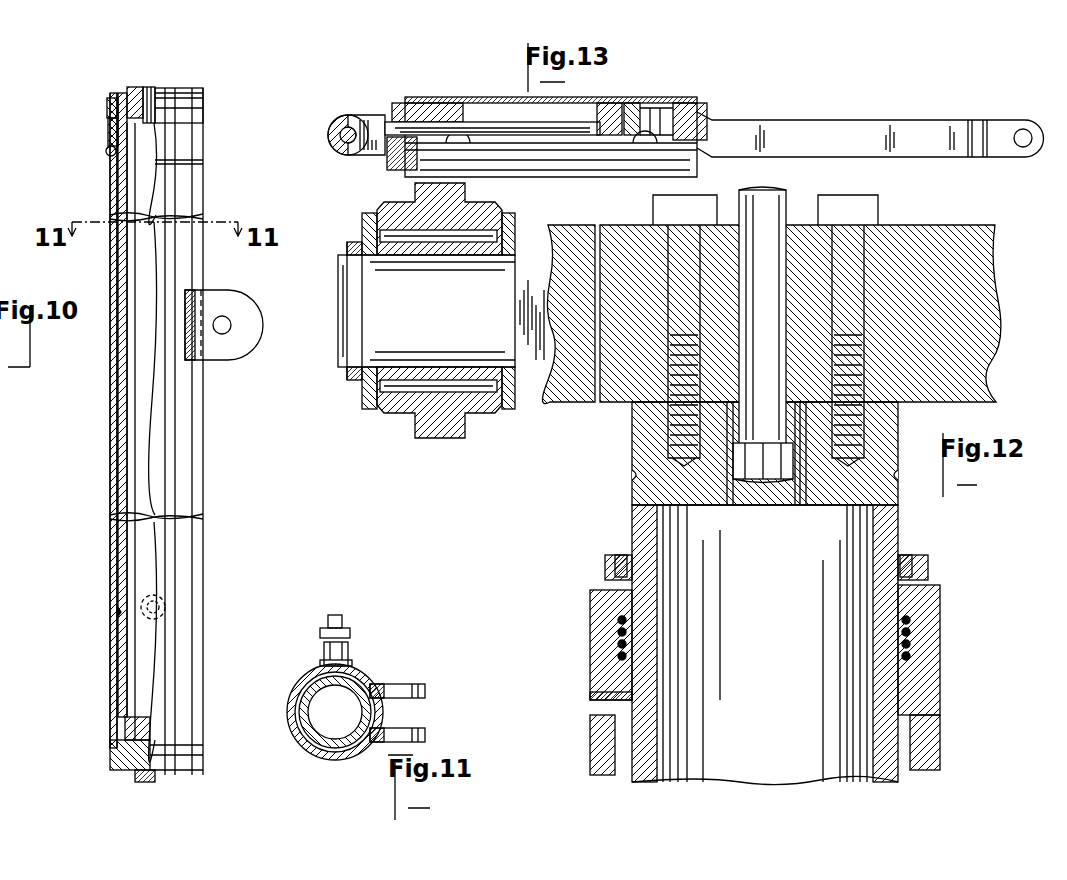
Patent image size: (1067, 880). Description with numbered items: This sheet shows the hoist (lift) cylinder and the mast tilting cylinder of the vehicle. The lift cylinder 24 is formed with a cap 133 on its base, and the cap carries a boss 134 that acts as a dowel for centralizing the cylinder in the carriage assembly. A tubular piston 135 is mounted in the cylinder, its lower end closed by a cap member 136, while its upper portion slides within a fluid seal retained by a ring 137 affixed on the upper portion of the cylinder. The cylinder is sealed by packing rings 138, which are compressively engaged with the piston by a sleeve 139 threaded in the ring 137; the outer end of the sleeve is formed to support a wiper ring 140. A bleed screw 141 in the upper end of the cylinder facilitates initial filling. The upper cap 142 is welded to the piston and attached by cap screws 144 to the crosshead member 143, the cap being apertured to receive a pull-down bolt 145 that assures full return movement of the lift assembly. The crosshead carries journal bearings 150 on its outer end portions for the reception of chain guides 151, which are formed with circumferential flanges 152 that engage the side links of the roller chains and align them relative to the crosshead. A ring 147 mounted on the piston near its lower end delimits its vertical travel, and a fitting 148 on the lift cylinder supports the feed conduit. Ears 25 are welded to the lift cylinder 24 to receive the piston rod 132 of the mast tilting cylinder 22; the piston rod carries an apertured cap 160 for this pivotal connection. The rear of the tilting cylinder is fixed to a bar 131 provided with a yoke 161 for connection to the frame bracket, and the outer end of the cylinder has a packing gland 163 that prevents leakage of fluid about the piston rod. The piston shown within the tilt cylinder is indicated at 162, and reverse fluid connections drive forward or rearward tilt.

In FIG. 13, the mast tilting cylinder 22 is at (655, 100).
In FIG. 10, the lift cylinder 24 is at (119, 183).
In FIG. 11, the lift cylinder 24 is at (305, 748).
In FIG. 12, the lift cylinder 24 is at (590, 740).
In FIG. 10, the ears 25 is at (215, 295).
In FIG. 11, the ears 25 is at (382, 684).
In FIG. 13, the bar 131 is at (845, 122).
In FIG. 13, the piston rod 132 is at (484, 122).
In FIG. 10, the cap 133 is at (110, 770).
In FIG. 10, the boss 134 is at (150, 782).
In FIG. 10, the tubular piston 135 is at (113, 445).
In FIG. 11, the tubular piston 135 is at (295, 690).
In FIG. 12, the tubular piston 135 is at (632, 768).
In FIG. 10, the cap member 136 is at (130, 717).
In FIG. 10, the ring 137 is at (106, 152).
In FIG. 12, the ring 137 is at (590, 640).
In FIG. 10, the packing rings 138 is at (108, 130).
In FIG. 12, the packing rings 138 is at (918, 632).
In FIG. 10, the sleeve 139 is at (107, 101).
In FIG. 12, the sleeve 139 is at (928, 570).
In FIG. 12, the wiper ring 140 is at (910, 560).
In FIG. 12, the bleed screw 141 is at (595, 700).
In FIG. 10, the upper cap 142 is at (130, 88).
In FIG. 12, the upper cap 142 is at (630, 463).
In FIG. 10, the crosshead member 143 is at (150, 88).
In FIG. 12, the crosshead member 143 is at (980, 322).
In FIG. 12, the cap screws 144 is at (660, 210).
In FIG. 12, the pull-down bolt 145 is at (765, 470).
In FIG. 10, the ring 147 is at (115, 610).
In FIG. 10, the fitting 148 is at (165, 604).
In FIG. 11, the fitting 148 is at (350, 650).
In FIG. 12, the journal bearings 150 is at (338, 290).
In FIG. 12, the chain guides 151 is at (405, 413).
In FIG. 12, the circumferential flanges 152 is at (445, 438).
In FIG. 13, the apertured cap 160 is at (358, 115).
In FIG. 13, the yoke 161 is at (1005, 122).
In FIG. 13, the piston 162 is at (620, 103).
In FIG. 13, the packing gland 163 is at (418, 103).